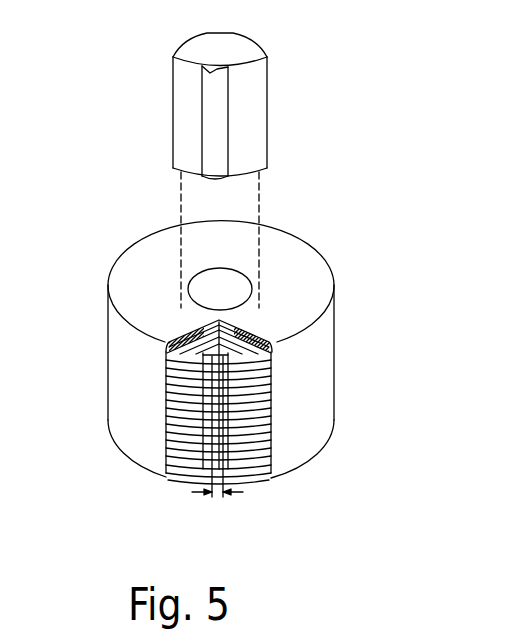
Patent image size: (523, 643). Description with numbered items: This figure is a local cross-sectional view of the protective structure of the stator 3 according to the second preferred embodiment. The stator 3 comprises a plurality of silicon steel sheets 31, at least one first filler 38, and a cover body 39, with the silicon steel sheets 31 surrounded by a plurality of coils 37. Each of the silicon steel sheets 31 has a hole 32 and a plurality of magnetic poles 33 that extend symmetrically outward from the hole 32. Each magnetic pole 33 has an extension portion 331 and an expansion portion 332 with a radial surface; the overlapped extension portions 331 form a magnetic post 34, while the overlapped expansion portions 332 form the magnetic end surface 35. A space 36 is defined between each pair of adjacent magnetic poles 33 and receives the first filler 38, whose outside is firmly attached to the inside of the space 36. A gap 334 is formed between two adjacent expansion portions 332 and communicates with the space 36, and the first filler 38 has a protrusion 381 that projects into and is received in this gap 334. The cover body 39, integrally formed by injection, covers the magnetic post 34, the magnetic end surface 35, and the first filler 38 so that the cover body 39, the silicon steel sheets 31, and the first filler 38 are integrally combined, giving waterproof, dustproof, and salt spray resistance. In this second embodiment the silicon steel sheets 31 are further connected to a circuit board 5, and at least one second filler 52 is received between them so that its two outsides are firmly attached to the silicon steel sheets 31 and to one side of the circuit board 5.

The stator 3 is at (373, 207).
The silicon steel sheets 31 is at (408, 413).
The hole 32 is at (231, 287).
The magnetic poles 33 is at (380, 467).
The extension portion 331 is at (273, 421).
The expansion portion 332 is at (252, 462).
The gap 334 is at (215, 495).
The magnetic post 34 is at (245, 348).
The magnetic end surface 35 is at (258, 378).
The space 36 is at (177, 327).
The coils 37 is at (170, 343).
The first filler 38 is at (268, 96).
The protrusion 381 is at (175, 58).
The cover body 39 is at (329, 338).
The circuit board 5 is at (187, 478).
The second filler 52 is at (177, 468).